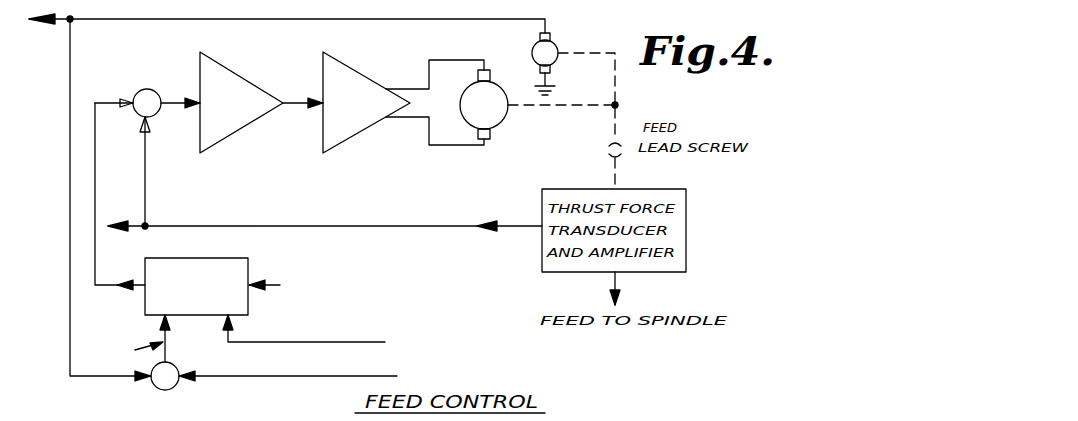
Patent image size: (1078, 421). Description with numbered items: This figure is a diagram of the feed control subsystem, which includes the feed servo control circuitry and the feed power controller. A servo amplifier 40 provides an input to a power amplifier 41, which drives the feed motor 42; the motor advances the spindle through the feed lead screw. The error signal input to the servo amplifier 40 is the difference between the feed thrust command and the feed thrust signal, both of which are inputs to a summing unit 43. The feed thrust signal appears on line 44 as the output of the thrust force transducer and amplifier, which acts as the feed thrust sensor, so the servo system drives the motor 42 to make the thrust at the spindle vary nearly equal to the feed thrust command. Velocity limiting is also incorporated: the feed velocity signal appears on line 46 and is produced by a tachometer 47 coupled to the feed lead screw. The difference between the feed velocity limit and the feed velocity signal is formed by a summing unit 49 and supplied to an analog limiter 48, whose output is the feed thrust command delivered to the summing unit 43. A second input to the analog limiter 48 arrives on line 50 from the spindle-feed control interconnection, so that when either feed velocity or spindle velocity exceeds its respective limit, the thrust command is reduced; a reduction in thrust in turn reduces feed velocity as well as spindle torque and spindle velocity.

The servo amplifier 40 is at (222, 130).
The power amplifier 41 is at (350, 125).
The feed motor 42 is at (498, 115).
The summing unit 43 is at (155, 89).
The line 44 is at (222, 226).
The line 46 is at (358, 19).
The tachometer 47 is at (557, 45).
The analog limiter 48 is at (238, 267).
The summing unit 49 is at (176, 385).
The line 50 is at (275, 341).